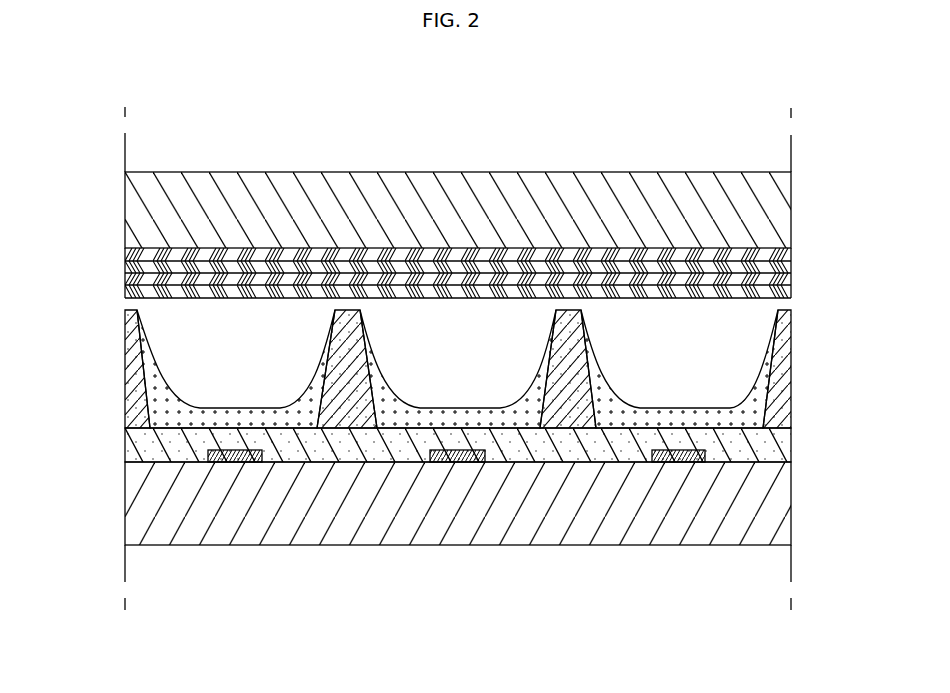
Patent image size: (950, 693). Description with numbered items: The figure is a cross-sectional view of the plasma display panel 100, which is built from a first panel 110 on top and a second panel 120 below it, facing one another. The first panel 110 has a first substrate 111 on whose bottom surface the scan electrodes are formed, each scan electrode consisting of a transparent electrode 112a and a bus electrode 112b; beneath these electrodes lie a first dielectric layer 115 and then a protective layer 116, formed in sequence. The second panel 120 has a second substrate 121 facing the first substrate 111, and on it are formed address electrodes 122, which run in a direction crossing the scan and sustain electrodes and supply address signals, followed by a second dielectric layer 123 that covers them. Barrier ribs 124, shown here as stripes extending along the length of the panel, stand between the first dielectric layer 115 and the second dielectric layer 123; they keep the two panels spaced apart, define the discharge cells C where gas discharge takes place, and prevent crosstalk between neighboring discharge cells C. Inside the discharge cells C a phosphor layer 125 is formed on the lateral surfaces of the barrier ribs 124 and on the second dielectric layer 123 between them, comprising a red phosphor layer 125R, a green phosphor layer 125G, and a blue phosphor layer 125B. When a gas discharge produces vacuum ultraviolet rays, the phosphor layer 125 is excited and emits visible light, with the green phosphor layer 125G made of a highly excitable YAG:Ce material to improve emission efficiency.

The plasma display panel 100 is at (90, 85).
The first panel 110 is at (108, 244).
The first substrate 111 is at (788, 207).
The transparent electrode 112a is at (527, 255).
The bus electrode 112b is at (592, 265).
The first dielectric layer 115 is at (788, 273).
The protective layer 116 is at (788, 290).
The second panel 120 is at (108, 388).
The second substrate 121 is at (785, 504).
The address electrodes 122 is at (703, 450).
The second dielectric layer 123 is at (788, 452).
The barrier ribs 124 is at (787, 382).
The phosphor layer 125 is at (567, 606).
The red phosphor layer 125R is at (292, 428).
The green phosphor layer 125G is at (411, 418).
The blue phosphor layer 125B is at (627, 420).
The discharge cells C is at (739, 346).